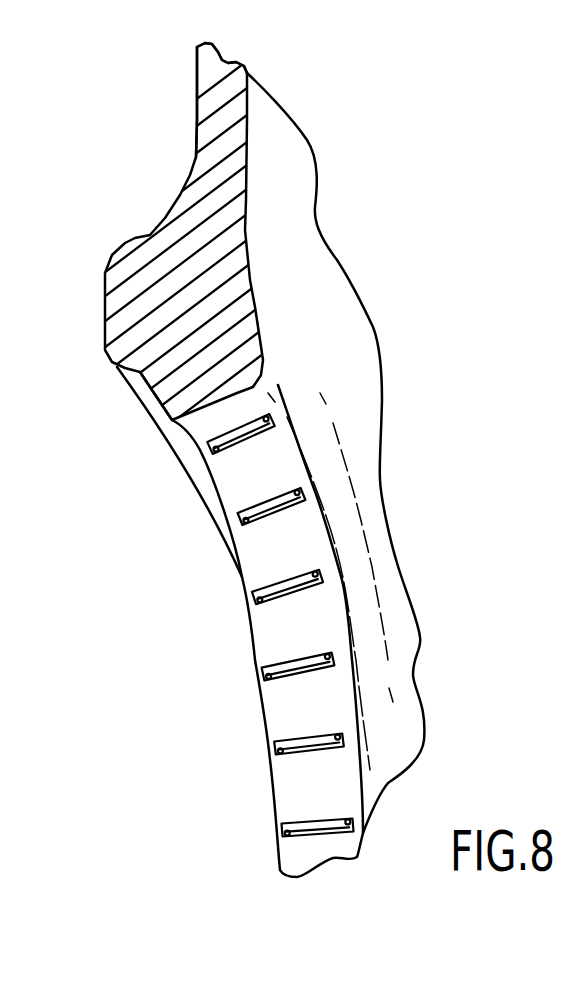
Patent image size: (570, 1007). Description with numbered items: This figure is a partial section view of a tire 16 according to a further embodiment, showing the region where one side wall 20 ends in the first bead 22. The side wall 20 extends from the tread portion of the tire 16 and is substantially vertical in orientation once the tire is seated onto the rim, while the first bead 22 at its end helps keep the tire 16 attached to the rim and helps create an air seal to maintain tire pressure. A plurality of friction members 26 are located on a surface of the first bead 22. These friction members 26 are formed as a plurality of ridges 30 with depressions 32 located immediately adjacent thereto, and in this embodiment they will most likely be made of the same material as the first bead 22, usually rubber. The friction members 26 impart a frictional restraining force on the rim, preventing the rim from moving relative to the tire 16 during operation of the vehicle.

The tire 16 is at (207, 62).
The side wall 20 is at (197, 117).
The first bead 22 is at (140, 325).
The friction members 26 is at (266, 677).
The ridges 30 is at (276, 585).
The depressions 32 is at (300, 593).